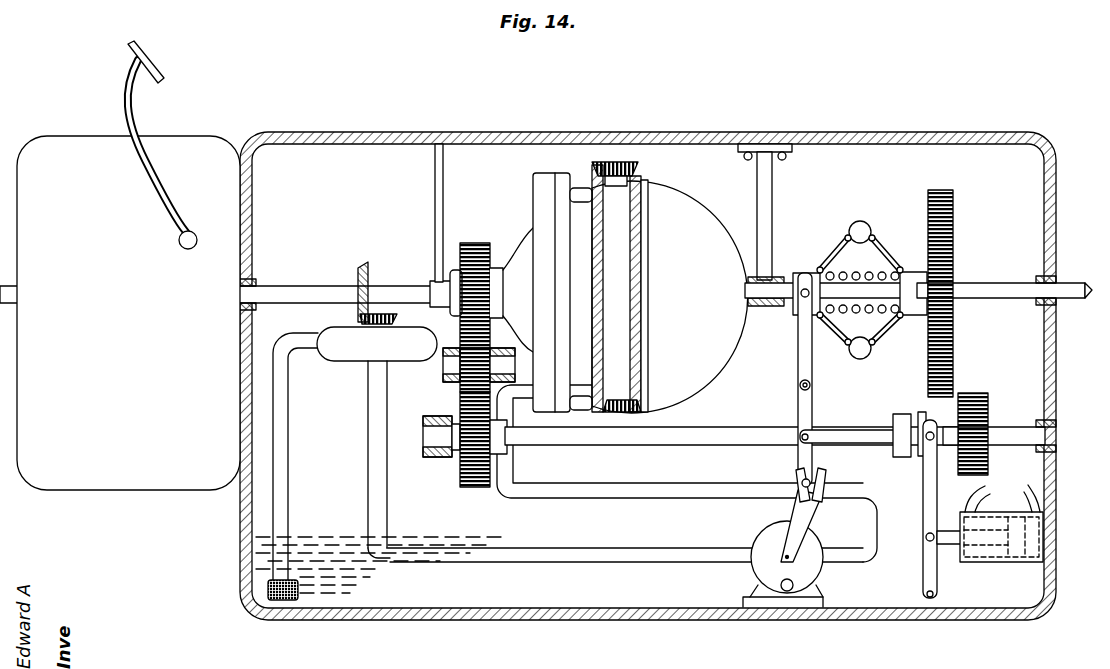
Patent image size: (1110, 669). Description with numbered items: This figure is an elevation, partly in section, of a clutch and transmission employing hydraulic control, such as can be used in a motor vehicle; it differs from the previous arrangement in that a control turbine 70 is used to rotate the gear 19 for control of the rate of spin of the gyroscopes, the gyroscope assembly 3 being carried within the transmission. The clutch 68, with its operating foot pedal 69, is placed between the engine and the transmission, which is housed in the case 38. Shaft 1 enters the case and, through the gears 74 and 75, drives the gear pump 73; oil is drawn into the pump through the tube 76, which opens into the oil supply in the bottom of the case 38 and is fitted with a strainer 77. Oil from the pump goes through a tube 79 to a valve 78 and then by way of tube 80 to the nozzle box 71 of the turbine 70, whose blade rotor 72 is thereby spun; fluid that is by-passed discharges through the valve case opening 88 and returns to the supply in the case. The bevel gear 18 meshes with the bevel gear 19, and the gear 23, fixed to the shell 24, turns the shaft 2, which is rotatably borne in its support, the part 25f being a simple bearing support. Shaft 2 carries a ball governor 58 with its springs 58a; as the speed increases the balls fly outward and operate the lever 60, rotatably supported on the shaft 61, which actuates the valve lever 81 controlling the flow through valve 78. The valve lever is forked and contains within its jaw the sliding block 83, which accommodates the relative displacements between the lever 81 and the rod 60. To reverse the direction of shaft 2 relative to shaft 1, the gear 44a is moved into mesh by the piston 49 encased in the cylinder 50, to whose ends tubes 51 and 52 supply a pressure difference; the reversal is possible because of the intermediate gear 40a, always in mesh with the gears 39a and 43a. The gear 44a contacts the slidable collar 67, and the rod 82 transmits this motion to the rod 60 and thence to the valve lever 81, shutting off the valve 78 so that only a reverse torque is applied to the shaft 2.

The shaft 1 is at (285, 286).
The shaft 2 is at (996, 287).
The friction sphere 3 is at (700, 212).
The bevel gear 18 is at (640, 170).
The bevel gear 19 is at (605, 225).
The gear 23 is at (648, 358).
The shell 24 is at (688, 388).
The bearing support 25f is at (434, 177).
The case 38 is at (1052, 543).
The gear 39a is at (474, 243).
The intermediate gear 40a is at (478, 362).
The gear 43a is at (465, 472).
The gear 44a is at (980, 393).
The piston 49 is at (1018, 563).
The cylinder 50 is at (968, 563).
The tube 51 is at (990, 498).
The tube 52 is at (1040, 490).
The ball governor 58 is at (862, 223).
The governor spring 58a is at (866, 270).
The lever 60 is at (797, 337).
The shaft 61 is at (799, 386).
The collar 67 is at (900, 452).
The clutch 68 is at (138, 471).
The foot pedal 69 is at (138, 120).
The turbine 70 is at (562, 180).
The nozzle box 71 is at (534, 200).
The blade rotor 72 is at (556, 219).
The gear pump 73 is at (345, 363).
The gear 74 is at (365, 266).
The gear 75 is at (398, 320).
The tube 76 is at (289, 476).
The strainer 77 is at (296, 605).
The valve 78 is at (757, 533).
The tube 79 is at (532, 549).
The tube 80 is at (569, 493).
The valve lever 81 is at (812, 518).
The rod 82 is at (847, 431).
The sliding block 83 is at (794, 480).
The valve case opening 88 is at (794, 585).